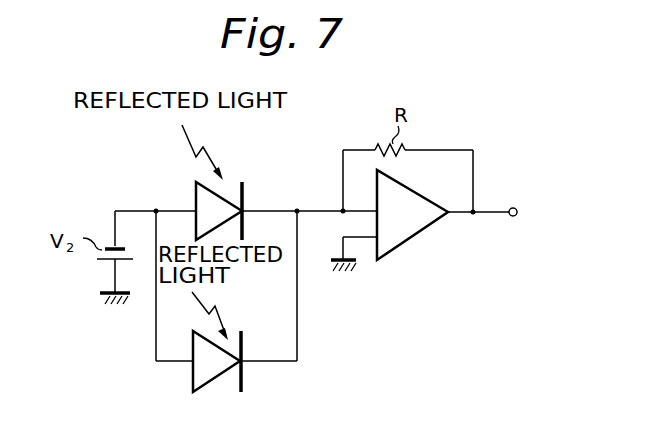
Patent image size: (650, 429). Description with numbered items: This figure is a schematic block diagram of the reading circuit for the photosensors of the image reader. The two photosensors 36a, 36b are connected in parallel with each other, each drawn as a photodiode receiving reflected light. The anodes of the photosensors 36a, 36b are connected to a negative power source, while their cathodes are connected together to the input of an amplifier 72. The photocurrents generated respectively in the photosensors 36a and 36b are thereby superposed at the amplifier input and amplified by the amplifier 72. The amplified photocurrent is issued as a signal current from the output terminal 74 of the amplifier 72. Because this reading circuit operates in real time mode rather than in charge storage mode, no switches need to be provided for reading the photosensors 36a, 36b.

The photosensor 36a is at (197, 200).
The photosensor 36b is at (201, 376).
The amplifier 72 is at (413, 228).
The output terminal 74 is at (519, 212).